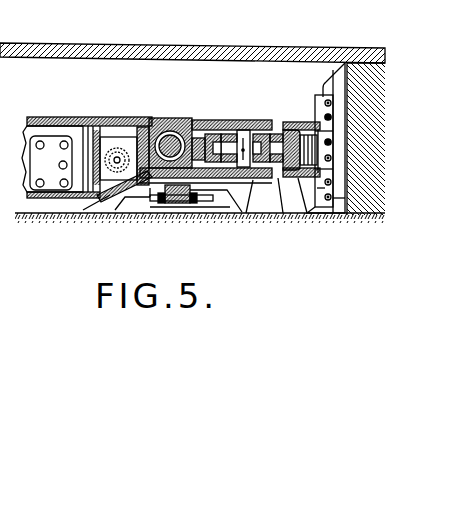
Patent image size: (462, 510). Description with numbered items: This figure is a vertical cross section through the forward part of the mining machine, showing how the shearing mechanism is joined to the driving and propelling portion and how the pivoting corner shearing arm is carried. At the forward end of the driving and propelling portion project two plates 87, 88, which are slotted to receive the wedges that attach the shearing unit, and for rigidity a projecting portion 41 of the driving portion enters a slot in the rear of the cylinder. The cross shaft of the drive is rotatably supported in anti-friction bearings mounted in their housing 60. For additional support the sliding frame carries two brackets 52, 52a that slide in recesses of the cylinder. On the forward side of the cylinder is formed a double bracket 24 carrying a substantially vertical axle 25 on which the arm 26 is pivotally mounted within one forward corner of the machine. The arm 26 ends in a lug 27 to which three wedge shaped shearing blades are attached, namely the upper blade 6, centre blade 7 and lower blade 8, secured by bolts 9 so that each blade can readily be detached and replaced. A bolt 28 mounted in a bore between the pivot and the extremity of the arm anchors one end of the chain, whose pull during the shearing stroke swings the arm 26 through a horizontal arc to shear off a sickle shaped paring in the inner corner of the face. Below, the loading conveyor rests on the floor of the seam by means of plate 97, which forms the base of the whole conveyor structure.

The plate 87 is at (60, 114).
The housing 60 is at (107, 150).
The projecting portion 41 is at (143, 126).
The bracket 52 is at (195, 118).
The double bracket 24 is at (279, 114).
The upper blade 6 is at (345, 100).
The bolts 9 is at (332, 143).
The centre blade 7 is at (343, 160).
The lug 27 is at (318, 188).
The lower blade 8 is at (343, 198).
The plate 88 is at (135, 200).
The bracket 52a is at (158, 204).
The plate 97 is at (196, 220).
The axle 25 is at (246, 213).
The arm 26 is at (283, 213).
The bolt 28 is at (307, 213).